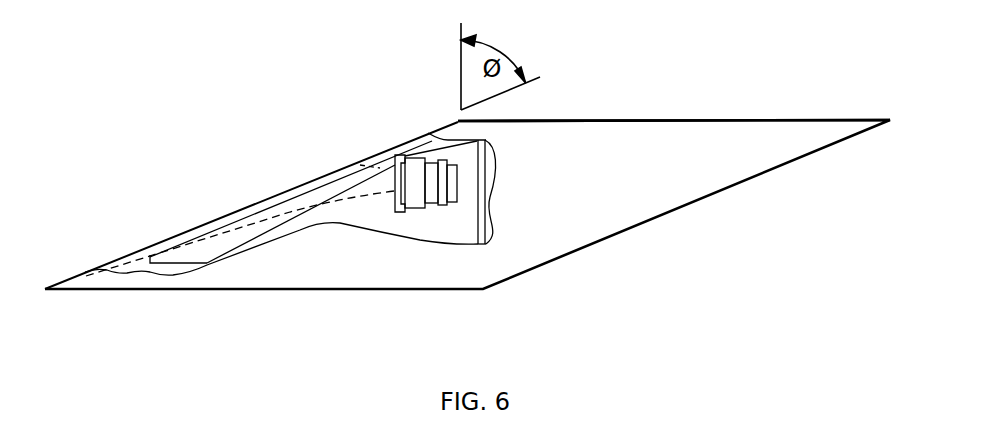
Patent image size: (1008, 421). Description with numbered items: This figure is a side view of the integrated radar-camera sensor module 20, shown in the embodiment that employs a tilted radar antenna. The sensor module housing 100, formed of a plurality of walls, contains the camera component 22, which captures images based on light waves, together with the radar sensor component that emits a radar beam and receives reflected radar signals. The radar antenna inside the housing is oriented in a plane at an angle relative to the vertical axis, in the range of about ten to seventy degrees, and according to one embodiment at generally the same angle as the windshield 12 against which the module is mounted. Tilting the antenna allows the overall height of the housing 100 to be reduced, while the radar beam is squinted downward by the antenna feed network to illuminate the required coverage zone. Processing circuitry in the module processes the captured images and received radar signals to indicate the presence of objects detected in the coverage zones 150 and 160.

The windshield 12 is at (141, 250).
The integrated radar-camera sensor module 20 is at (733, 90).
The camera component 22 is at (436, 204).
The sensor module housing 100 is at (615, 121).
The coverage zone 150 is at (203, 224).
The coverage zone 160 is at (376, 153).